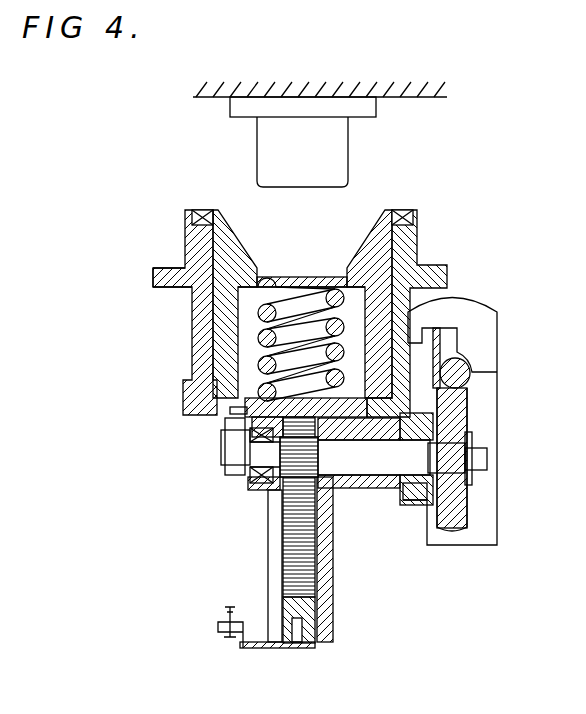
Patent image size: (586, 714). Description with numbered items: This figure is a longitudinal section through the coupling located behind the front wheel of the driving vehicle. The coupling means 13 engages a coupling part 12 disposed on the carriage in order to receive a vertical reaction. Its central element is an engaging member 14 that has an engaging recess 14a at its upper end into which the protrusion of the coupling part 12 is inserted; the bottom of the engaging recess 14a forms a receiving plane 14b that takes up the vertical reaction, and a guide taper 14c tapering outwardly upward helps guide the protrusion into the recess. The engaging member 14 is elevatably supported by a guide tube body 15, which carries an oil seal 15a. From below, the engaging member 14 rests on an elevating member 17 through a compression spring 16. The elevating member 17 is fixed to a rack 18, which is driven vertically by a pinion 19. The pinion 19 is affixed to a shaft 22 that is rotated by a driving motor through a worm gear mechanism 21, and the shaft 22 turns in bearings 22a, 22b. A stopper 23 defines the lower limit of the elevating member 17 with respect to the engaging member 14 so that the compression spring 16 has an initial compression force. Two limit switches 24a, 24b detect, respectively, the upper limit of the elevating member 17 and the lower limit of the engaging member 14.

The coupling part 12 is at (332, 149).
The coupling means 13 is at (190, 203).
The engaging member 14 is at (196, 236).
The engaging recess 14a is at (297, 258).
The receiving plane 14b is at (313, 273).
The guide taper 14c is at (232, 246).
The guide tube body 15 is at (190, 258).
The oil seal 15a is at (415, 225).
The compression spring 16 is at (238, 342).
The elevating member 17 is at (215, 407).
The rack 18 is at (297, 552).
The pinion 19 is at (310, 480).
The worm gear mechanism 21 is at (497, 412).
The shaft 22 is at (358, 462).
The bearing 22a is at (252, 480).
The bearing 22b is at (430, 498).
The stopper 23 is at (235, 413).
The limit switch 24a is at (228, 446).
The limit switch 24b is at (225, 468).